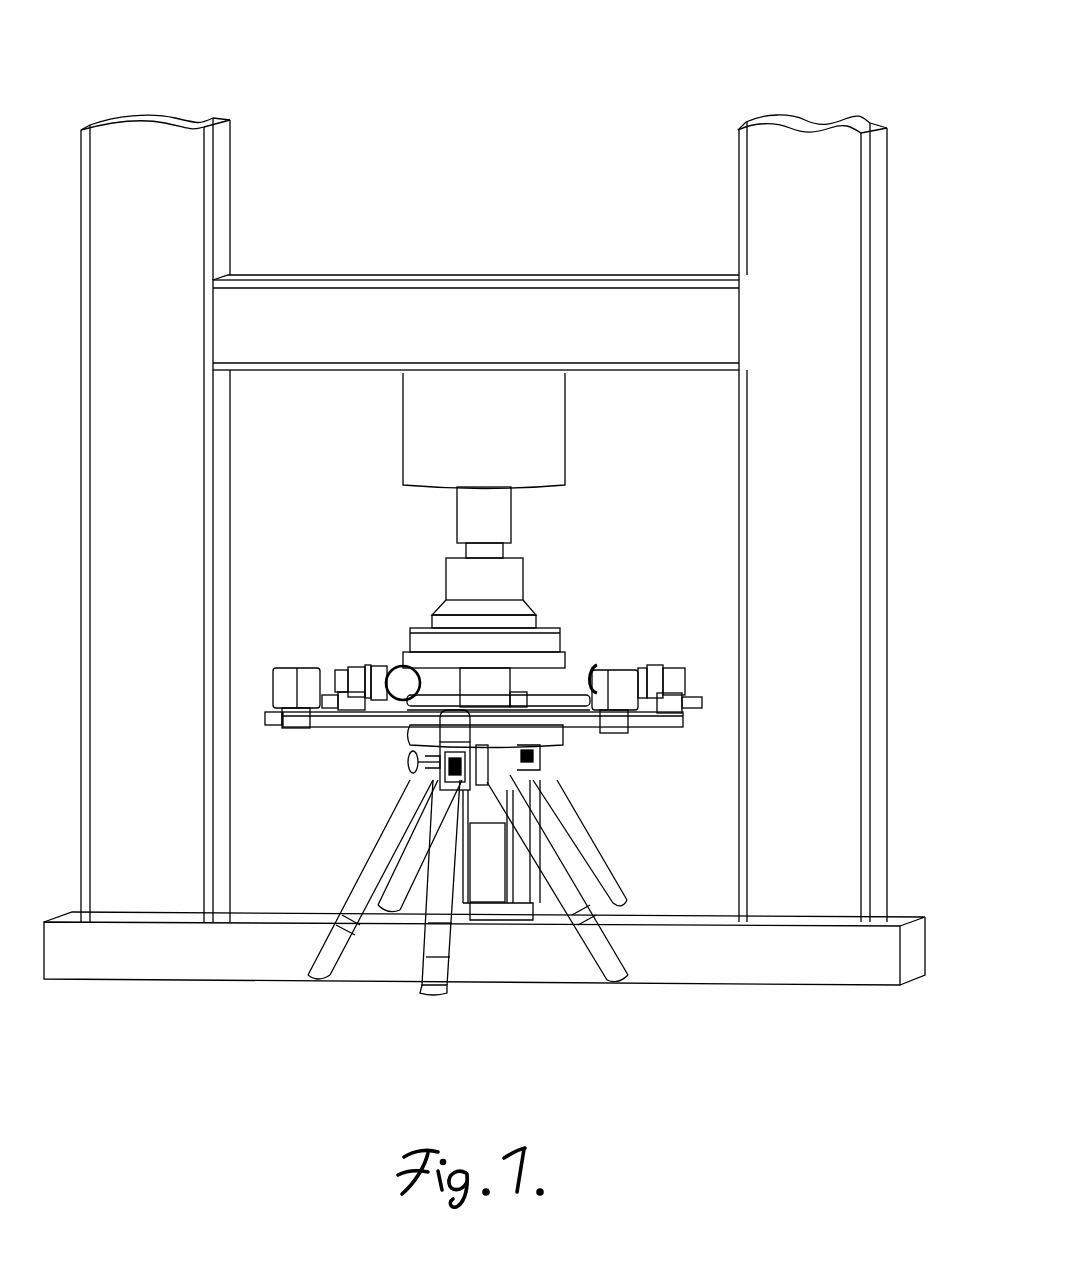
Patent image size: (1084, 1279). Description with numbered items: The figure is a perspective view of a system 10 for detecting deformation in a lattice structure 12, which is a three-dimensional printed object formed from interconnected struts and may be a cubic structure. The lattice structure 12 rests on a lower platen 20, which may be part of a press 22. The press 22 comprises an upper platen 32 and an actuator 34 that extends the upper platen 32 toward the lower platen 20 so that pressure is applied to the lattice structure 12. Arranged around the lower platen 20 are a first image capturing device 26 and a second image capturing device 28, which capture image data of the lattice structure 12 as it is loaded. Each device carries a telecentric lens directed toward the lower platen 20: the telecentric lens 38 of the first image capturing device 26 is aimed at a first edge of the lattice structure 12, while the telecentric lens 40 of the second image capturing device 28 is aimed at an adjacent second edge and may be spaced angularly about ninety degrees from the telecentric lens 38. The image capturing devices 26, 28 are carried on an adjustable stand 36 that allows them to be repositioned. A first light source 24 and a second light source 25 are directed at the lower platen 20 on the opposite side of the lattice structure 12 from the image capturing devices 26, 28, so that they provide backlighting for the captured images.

The system 10 is at (603, 72).
The lattice structure 12 is at (497, 680).
The lower platen 20 is at (550, 733).
The press 22 is at (848, 165).
The first light source 24 is at (305, 692).
The second light source 25 is at (625, 693).
The first image capturing device 26 is at (345, 672).
The second image capturing device 28 is at (680, 677).
The upper platen 32 is at (427, 660).
The actuator 34 is at (502, 513).
The adjustable stand 36 is at (693, 705).
The telecentric lens 38 is at (400, 672).
The telecentric lens 40 is at (603, 668).